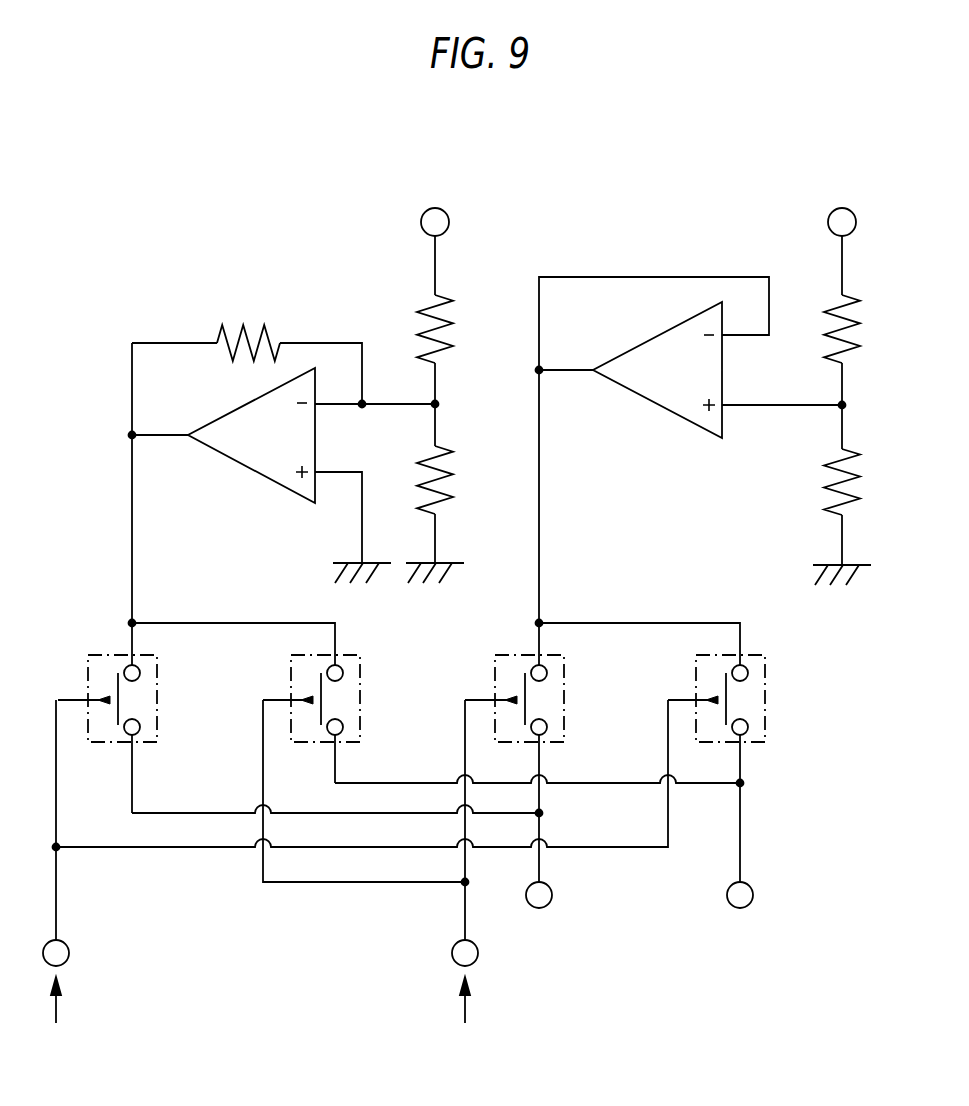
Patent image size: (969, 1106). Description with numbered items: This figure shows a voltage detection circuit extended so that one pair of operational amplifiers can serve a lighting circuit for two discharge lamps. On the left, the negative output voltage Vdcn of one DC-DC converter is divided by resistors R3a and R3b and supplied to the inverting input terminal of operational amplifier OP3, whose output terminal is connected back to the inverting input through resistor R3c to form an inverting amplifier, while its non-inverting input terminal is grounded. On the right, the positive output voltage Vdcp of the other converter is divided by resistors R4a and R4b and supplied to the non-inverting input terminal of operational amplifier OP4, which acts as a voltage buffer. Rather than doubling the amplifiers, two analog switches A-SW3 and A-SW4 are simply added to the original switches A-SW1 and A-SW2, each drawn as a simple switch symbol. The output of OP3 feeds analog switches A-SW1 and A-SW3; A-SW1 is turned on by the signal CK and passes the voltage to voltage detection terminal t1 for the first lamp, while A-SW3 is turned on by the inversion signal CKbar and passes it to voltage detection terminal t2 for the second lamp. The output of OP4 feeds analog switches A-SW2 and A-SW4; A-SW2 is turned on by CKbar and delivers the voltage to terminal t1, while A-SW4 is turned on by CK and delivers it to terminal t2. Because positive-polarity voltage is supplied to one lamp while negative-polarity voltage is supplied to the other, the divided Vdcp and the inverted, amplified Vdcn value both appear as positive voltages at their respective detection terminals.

The resistor R3a is at (457, 349).
The resistor R3b is at (450, 493).
The resistor R3c is at (247, 348).
The resistor R4a is at (863, 350).
The resistor R4b is at (857, 495).
The operational amplifier OP3 is at (283, 475).
The operational amplifier OP4 is at (690, 357).
The analog switch A-SW1 is at (141, 692).
The analog switch A-SW2 is at (548, 692).
The analog switch A-SW3 is at (346, 692).
The analog switch A-SW4 is at (751, 692).
The output voltage Vdcn is at (435, 236).
The output voltage Vdcp is at (842, 236).
The voltage detection terminal t1 is at (539, 838).
The voltage detection terminal t2 is at (740, 838).
The signal CK is at (55, 878).
The inversion signal of signal CK CKbar is at (477, 1037).